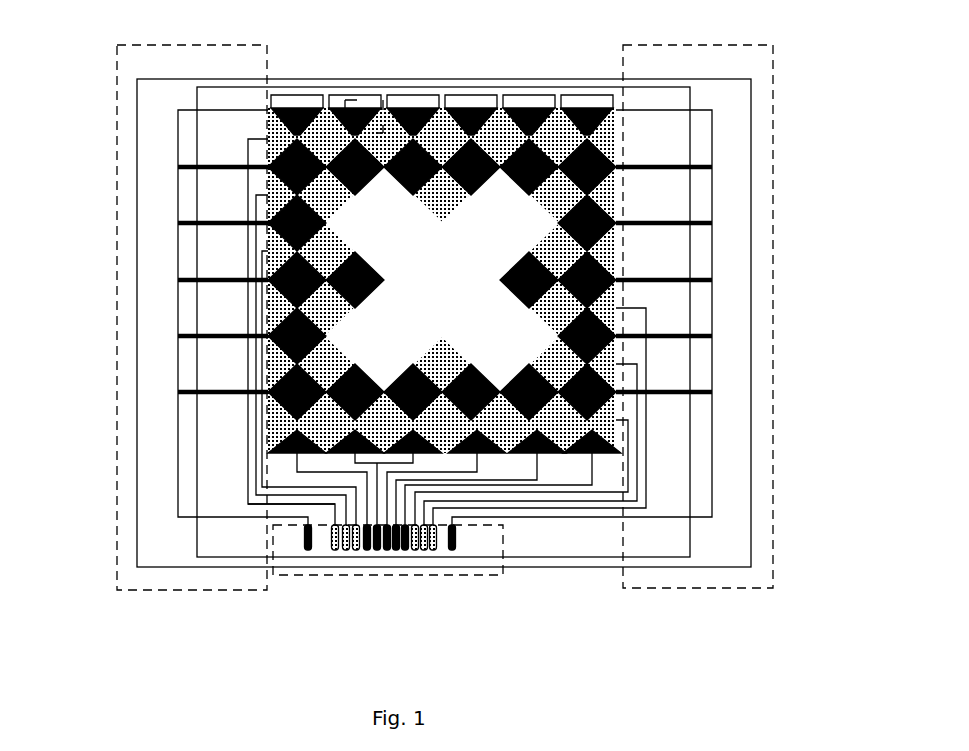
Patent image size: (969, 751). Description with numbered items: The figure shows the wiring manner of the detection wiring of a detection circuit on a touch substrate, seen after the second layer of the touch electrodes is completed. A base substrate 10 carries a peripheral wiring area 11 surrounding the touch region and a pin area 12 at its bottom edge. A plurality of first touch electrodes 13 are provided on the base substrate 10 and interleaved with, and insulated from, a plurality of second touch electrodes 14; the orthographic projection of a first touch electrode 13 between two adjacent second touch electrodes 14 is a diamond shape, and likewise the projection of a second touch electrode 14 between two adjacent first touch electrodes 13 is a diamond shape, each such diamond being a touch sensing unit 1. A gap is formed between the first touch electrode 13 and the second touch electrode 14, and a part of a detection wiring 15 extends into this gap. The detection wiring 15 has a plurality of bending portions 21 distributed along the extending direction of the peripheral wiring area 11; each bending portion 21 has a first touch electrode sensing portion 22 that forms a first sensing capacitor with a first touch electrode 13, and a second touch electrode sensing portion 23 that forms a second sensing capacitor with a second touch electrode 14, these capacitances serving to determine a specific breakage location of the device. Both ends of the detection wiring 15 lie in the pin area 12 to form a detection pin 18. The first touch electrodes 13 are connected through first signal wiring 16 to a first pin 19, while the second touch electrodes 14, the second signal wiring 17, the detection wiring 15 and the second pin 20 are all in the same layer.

The touch sensing unit 1 is at (445, 279).
The base substrate 10 is at (752, 184).
The peripheral wiring area 11 is at (117, 280).
The pin area 12 is at (292, 577).
The first touch electrode 13 is at (616, 135).
The second touch electrode 14 is at (585, 113).
The detection wiring 15 is at (565, 517).
The first signal wiring 16 is at (258, 504).
The second signal wiring 17 is at (592, 485).
The detection pin 18 is at (452, 552).
The first pin 19 is at (420, 552).
The second pin 20 is at (370, 552).
The bending portion 21 is at (380, 100).
The first touch electrode sensing portion 22 is at (430, 126).
The second touch electrode sensing portion 23 is at (520, 118).